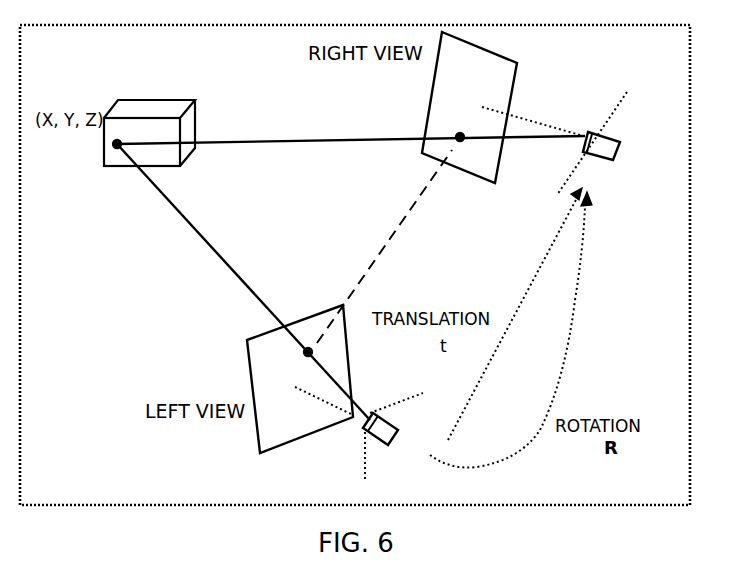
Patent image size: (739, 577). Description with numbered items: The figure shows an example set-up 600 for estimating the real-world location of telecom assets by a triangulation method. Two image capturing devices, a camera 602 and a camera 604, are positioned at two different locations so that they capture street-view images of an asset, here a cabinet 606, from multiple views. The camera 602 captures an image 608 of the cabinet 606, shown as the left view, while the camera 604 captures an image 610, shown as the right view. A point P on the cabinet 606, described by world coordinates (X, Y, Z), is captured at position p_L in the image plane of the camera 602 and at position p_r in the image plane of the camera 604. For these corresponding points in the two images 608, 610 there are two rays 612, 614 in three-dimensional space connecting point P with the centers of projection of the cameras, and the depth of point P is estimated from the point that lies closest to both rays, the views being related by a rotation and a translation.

The set-up 600 is at (230, 518).
The camera 602 is at (364, 430).
The camera 604 is at (612, 122).
The cabinet 606 is at (107, 150).
The image 608 is at (256, 430).
The image 610 is at (519, 64).
The ray 612 is at (210, 248).
The ray 614 is at (318, 142).